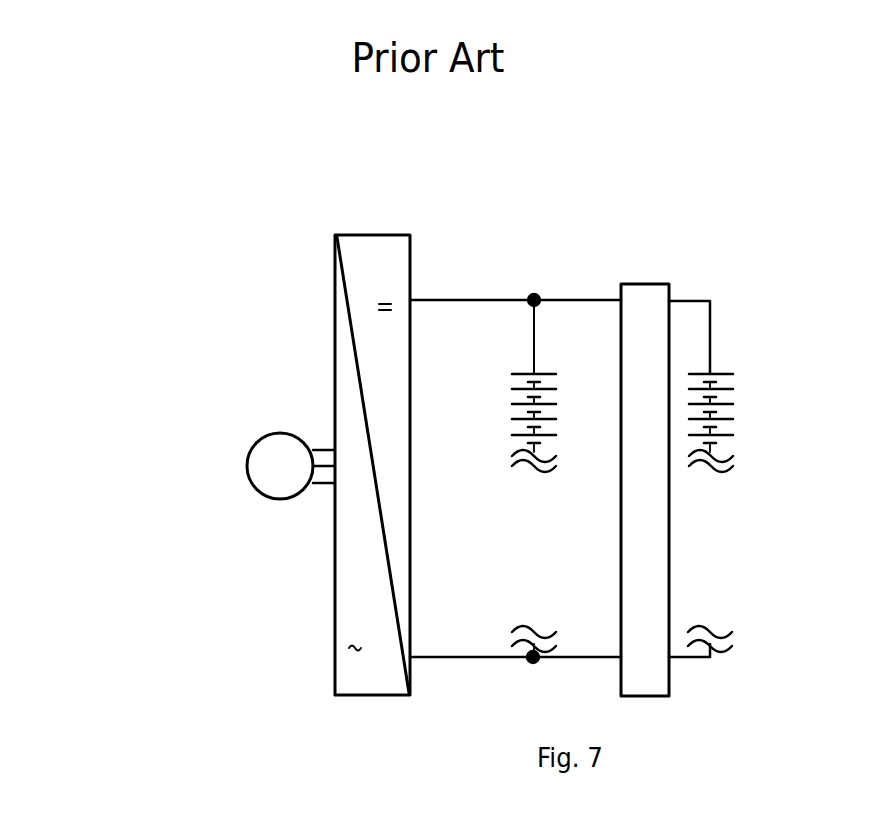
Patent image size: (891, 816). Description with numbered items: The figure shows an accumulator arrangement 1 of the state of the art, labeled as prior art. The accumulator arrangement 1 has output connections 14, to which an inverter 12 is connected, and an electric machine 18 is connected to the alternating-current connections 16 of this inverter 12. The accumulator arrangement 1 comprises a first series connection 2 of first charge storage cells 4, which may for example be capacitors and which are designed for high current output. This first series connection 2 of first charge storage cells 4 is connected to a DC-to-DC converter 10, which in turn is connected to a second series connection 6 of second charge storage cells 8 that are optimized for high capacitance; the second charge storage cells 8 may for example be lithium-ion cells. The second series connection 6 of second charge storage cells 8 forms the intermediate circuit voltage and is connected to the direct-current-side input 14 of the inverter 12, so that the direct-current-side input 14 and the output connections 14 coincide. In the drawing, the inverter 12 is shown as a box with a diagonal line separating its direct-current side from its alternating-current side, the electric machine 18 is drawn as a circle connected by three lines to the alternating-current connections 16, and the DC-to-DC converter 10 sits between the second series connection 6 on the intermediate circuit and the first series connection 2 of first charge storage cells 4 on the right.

The accumulator arrangement 1 is at (661, 156).
The first series connection 2 is at (751, 467).
The first charge storage cells 4 is at (735, 374).
The second series connection 6 is at (536, 386).
The second charge storage cells 8 is at (508, 374).
The DC-to-DC converter 10 is at (646, 302).
The inverter 12 is at (355, 255).
The output connections 14 is at (425, 527).
The alternating-current connections 16 is at (318, 425).
The electric machine 18 is at (257, 474).